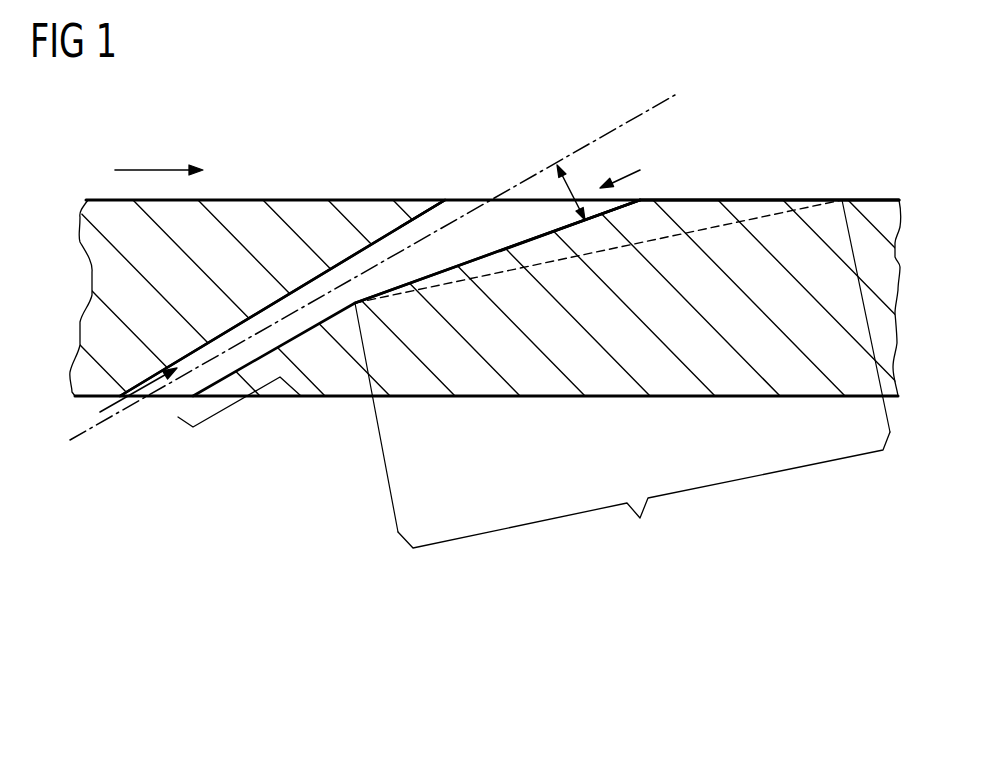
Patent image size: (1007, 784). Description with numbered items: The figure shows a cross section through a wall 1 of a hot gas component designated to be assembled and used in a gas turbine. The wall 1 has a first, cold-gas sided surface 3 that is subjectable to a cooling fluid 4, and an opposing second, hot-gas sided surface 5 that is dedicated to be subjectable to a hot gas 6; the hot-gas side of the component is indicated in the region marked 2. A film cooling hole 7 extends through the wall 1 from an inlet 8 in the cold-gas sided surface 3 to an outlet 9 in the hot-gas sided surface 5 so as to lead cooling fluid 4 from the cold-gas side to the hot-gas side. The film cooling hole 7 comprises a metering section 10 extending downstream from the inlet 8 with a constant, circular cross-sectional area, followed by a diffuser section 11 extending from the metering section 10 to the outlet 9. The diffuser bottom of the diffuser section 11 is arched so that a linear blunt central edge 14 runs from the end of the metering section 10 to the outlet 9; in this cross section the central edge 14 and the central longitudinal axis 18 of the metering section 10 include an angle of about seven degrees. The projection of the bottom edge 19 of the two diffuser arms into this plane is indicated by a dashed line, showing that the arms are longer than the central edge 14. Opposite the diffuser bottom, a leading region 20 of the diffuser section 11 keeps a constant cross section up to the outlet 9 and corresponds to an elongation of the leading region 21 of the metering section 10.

The wall 1 is at (735, 387).
The component surface region 2 is at (768, 138).
The cold-gas sided surface 3 is at (487, 397).
The cooling fluid 4 is at (143, 380).
The hot-gas sided surface 5 is at (370, 200).
The hot gas 6 is at (150, 170).
The film cooling hole 7 is at (640, 170).
The inlet 8 is at (167, 398).
The outlet 9 is at (477, 200).
The metering section 10 is at (298, 367).
The diffuser section 11 is at (622, 378).
The central edge 14 is at (541, 235).
The central longitudinal axis 18 is at (635, 120).
The bottom edge 19 is at (697, 230).
The leading region of the diffuser section 20 is at (453, 207).
The leading region of the metering section 21 is at (293, 290).